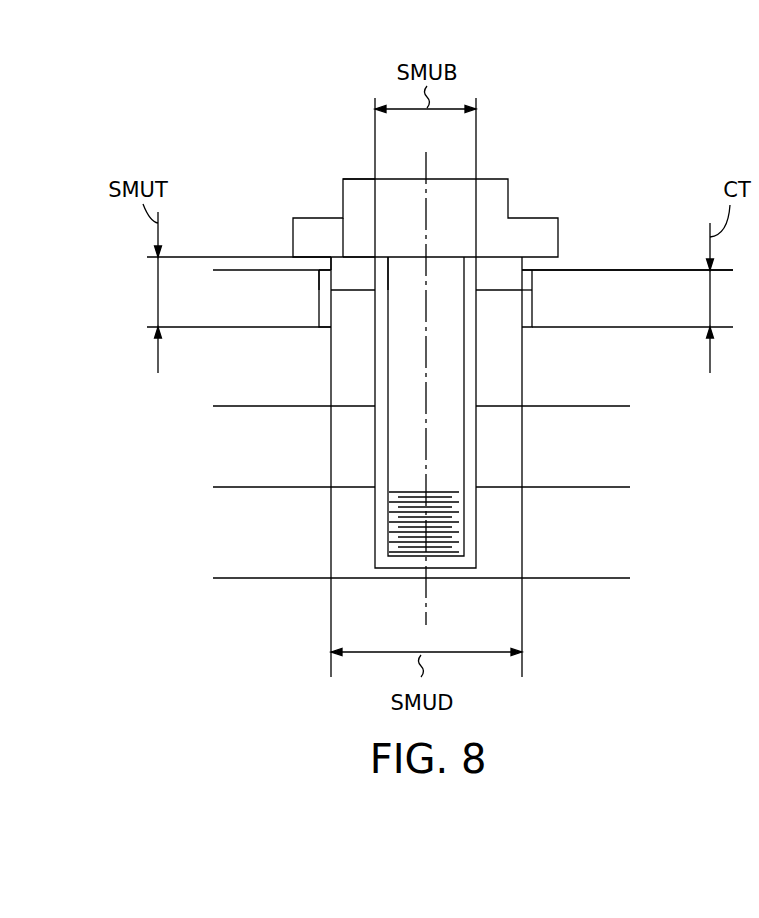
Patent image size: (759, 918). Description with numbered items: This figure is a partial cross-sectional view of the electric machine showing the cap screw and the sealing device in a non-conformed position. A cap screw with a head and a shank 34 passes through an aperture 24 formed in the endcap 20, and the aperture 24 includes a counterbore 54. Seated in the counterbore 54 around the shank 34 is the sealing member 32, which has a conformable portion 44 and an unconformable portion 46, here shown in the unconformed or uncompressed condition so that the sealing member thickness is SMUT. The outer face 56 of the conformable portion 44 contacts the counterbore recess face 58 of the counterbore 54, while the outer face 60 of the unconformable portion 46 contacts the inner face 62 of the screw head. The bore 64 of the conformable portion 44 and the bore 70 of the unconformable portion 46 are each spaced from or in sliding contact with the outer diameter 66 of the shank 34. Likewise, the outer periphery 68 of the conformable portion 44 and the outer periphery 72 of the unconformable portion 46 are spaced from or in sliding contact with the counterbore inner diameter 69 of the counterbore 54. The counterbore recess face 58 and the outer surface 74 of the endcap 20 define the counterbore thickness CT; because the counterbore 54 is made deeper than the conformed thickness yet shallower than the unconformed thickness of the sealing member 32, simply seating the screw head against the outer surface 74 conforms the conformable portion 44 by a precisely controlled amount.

The endcap 20 is at (617, 270).
The aperture 24 is at (490, 146).
The sealing member 32 is at (490, 342).
The shank 34 is at (387, 388).
The conformable portion 44 is at (541, 313).
The unconformable portion 46 is at (553, 290).
The counterbore 54 is at (532, 282).
The outer face 56 is at (333, 327).
The counterbore recess face 58 is at (362, 323).
The outer face 60 is at (361, 257).
The inner face 62 is at (370, 252).
The bore 64 is at (381, 318).
The outer diameter 66 is at (467, 272).
The outer periphery 68 is at (328, 267).
The counterbore inner diameter 69 is at (328, 283).
The bore 70 is at (388, 257).
The outer periphery 72 is at (322, 257).
The outer surface 74 is at (583, 270).